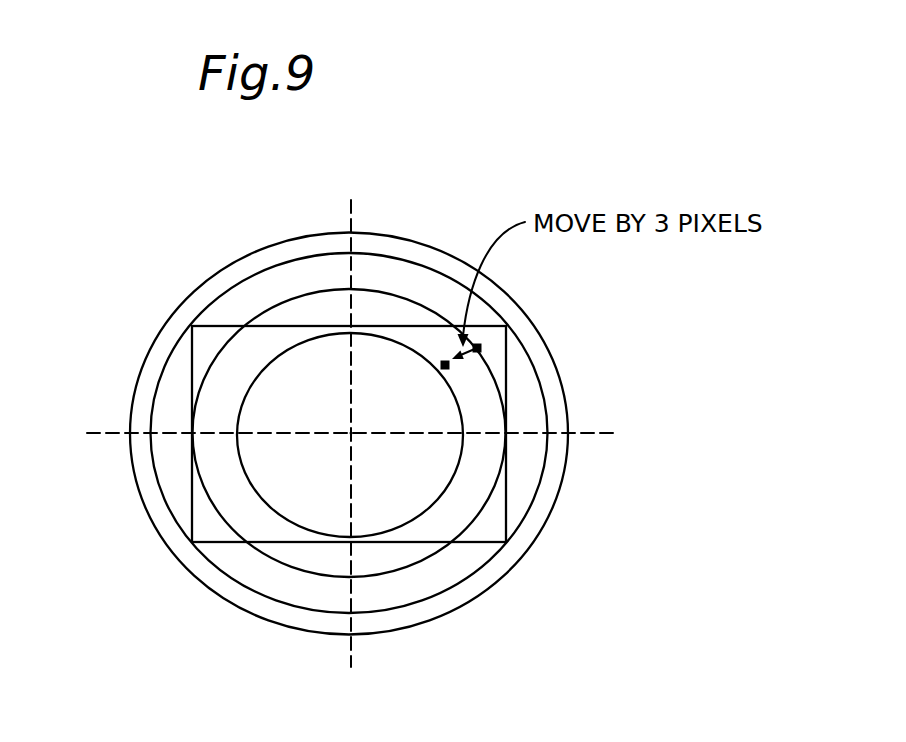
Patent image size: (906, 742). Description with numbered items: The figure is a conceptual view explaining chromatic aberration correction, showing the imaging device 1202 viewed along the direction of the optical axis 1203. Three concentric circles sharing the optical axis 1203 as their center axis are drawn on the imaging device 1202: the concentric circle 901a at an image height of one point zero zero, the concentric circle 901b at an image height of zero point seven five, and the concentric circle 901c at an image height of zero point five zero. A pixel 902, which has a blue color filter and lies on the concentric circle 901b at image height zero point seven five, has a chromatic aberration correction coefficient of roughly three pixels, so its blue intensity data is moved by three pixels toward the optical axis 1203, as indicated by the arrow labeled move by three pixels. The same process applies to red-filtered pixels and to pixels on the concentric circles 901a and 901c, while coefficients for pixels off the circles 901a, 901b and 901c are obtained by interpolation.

The concentric circle 901a is at (232, 290).
The concentric circle 901b is at (237, 337).
The concentric circle 901c is at (270, 360).
The pixel 902 is at (481, 348).
The imaging device 1202 is at (482, 543).
The optical axis 1203 is at (352, 436).